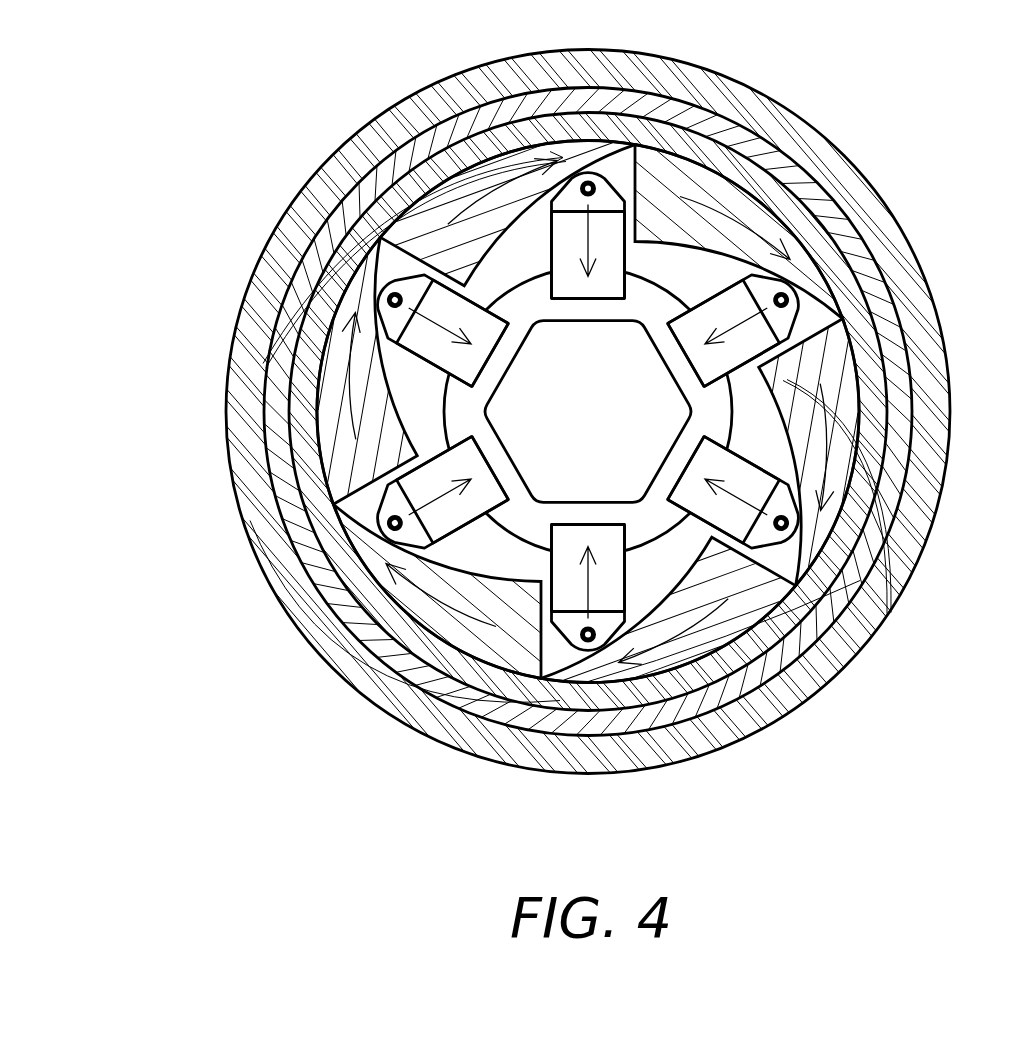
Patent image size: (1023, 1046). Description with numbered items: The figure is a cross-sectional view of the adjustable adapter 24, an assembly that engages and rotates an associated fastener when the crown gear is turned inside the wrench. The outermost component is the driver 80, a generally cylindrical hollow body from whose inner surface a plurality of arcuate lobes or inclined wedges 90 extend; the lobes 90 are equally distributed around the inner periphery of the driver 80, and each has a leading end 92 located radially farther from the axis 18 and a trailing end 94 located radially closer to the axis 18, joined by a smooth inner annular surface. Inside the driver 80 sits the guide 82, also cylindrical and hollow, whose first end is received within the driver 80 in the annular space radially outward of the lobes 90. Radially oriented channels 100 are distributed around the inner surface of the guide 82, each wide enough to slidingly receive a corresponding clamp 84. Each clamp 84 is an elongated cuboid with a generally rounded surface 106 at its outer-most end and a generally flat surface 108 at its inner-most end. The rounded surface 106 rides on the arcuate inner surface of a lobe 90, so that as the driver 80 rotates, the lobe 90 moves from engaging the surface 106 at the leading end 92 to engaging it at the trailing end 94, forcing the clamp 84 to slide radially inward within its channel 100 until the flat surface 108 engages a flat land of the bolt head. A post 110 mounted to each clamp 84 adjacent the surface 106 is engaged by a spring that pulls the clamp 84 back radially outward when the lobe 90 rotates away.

The adjustable adapter 24 is at (251, 868).
The axis 18 is at (590, 409).
The driver 80 is at (277, 574).
The guide 82 is at (380, 612).
The clamp 84 is at (580, 234).
The lobe 90 is at (664, 179).
The leading end 92 is at (857, 249).
The trailing end 94 is at (503, 296).
The channel 100 is at (733, 369).
The rounded surface 106 is at (567, 176).
The flat surface 108 is at (693, 436).
The post 110 is at (589, 194).